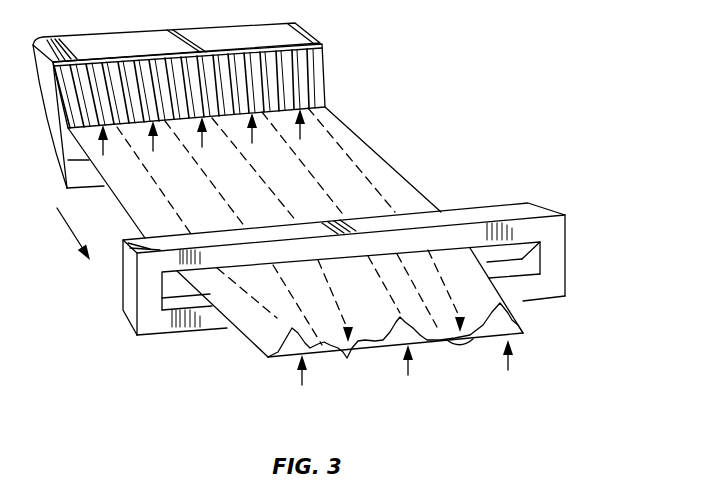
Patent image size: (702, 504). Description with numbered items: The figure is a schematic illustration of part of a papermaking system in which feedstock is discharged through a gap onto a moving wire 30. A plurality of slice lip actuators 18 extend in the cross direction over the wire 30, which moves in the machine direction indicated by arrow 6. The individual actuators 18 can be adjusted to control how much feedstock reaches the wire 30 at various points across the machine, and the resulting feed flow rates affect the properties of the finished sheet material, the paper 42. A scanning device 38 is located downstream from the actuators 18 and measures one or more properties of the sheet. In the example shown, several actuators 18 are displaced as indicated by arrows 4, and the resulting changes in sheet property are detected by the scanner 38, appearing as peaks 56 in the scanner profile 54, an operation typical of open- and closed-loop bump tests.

The arrows 4 is at (105, 148).
The arrow 6 is at (72, 225).
The slice lip actuators 18 is at (305, 77).
The wire 30 is at (367, 138).
The scanning device 38 is at (477, 217).
The paper 42 is at (255, 325).
The scanner profile 54 is at (494, 312).
The peaks 56 is at (348, 328).